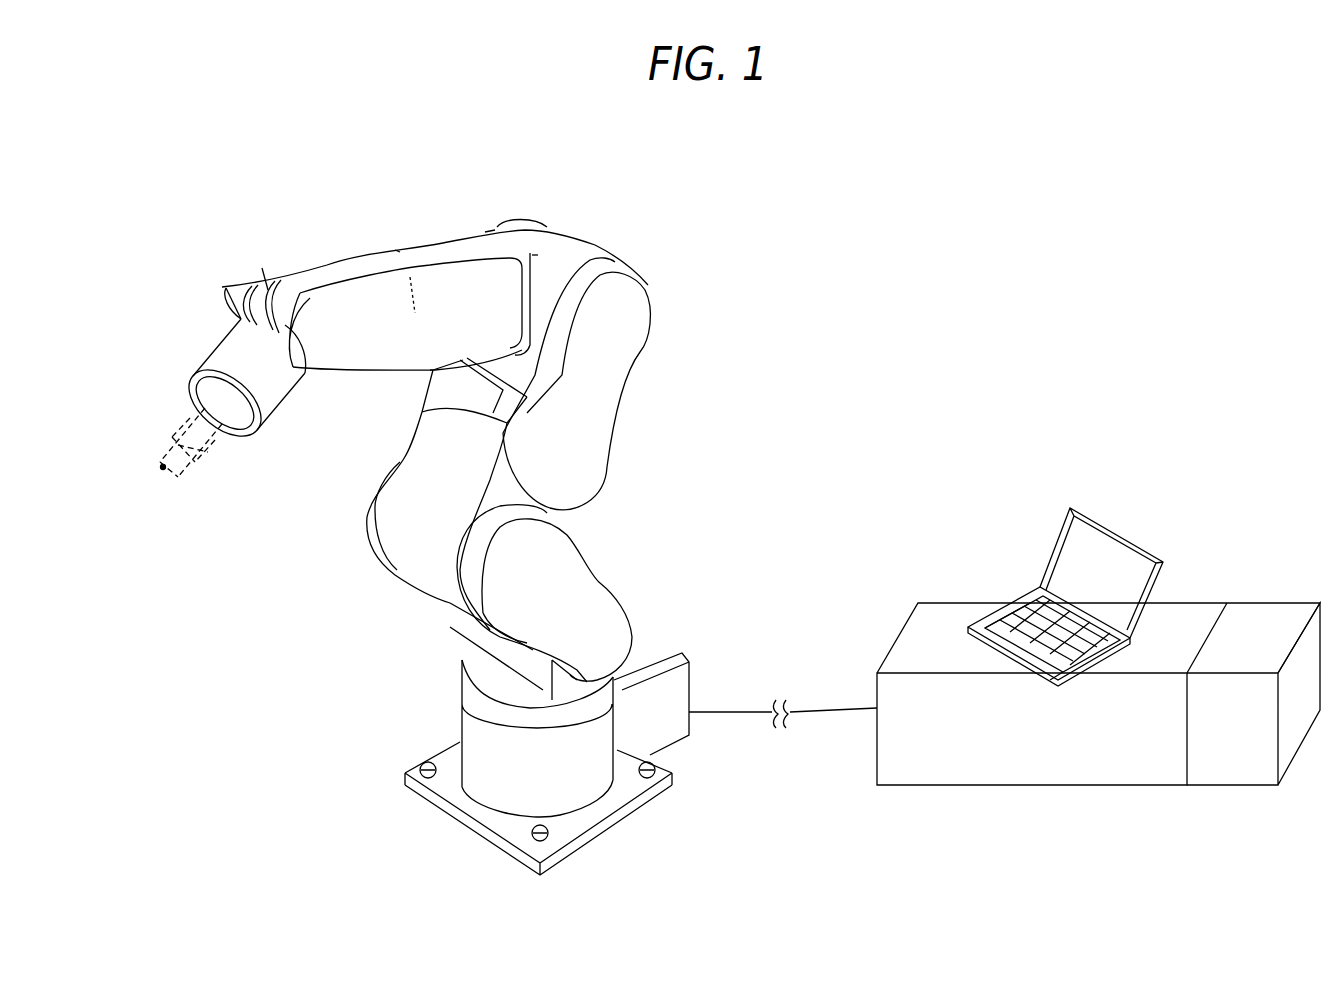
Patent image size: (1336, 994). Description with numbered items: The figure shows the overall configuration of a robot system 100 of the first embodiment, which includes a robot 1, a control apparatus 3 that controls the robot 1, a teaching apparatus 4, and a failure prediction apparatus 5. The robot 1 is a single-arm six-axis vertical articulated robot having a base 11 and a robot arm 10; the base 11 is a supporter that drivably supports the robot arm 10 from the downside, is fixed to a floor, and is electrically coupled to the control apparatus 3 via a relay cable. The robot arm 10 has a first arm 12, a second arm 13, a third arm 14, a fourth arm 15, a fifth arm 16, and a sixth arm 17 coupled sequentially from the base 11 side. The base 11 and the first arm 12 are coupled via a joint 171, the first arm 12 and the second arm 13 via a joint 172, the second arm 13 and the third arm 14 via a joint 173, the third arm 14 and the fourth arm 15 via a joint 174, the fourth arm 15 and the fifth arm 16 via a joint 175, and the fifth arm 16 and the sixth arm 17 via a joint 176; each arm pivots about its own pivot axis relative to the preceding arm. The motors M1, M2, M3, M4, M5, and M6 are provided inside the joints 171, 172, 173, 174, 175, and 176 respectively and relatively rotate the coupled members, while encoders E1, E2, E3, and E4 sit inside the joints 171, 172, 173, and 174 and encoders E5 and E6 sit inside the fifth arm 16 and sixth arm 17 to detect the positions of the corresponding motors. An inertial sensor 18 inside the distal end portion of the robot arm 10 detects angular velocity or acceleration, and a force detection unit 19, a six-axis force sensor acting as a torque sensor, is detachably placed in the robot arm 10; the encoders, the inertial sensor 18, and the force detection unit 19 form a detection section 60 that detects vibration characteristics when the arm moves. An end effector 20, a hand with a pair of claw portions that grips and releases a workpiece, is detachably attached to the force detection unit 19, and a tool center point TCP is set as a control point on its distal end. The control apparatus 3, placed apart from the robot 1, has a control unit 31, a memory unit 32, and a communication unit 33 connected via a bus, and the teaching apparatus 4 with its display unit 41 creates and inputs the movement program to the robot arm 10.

The robot system 100 is at (1256, 206).
The robot 1 is at (726, 211).
The robot arm 10 is at (650, 282).
The base 11 is at (540, 790).
The first arm 12 is at (617, 623).
The second arm 13 is at (590, 442).
The third arm 14 is at (573, 230).
The fourth arm 15 is at (435, 283).
The fifth arm 16 is at (268, 290).
The sixth arm 17 is at (237, 343).
The inertial sensor 18 is at (225, 325).
The force detection unit 19 is at (263, 405).
The detection section 60 is at (200, 378).
The end effector 20 is at (213, 440).
The tool center point TCP is at (160, 468).
The joint 171 is at (487, 667).
The joint 172 is at (367, 520).
The joint 173 is at (535, 255).
The joint 174 is at (490, 230).
The joint 175 is at (277, 270).
The joint 176 is at (322, 377).
The motor M1 is at (606, 764).
The encoder E1 is at (580, 753).
The motor M2 is at (597, 593).
The encoder E2 is at (567, 600).
The motor M3 is at (620, 471).
The encoder E3 is at (560, 478).
The motor M4 is at (637, 310).
The encoder E4 is at (545, 288).
The motor M5 is at (388, 201).
The encoder E5 is at (397, 248).
The motor M6 is at (205, 224).
The encoder E6 is at (262, 268).
The control apparatus 3 is at (1182, 596).
The control unit 31 is at (943, 748).
The memory unit 32 is at (1010, 748).
The communication unit 33 is at (1078, 748).
The teaching apparatus 4 is at (1120, 520).
The display unit 41 is at (1077, 562).
The failure prediction apparatus 5 is at (1275, 596).